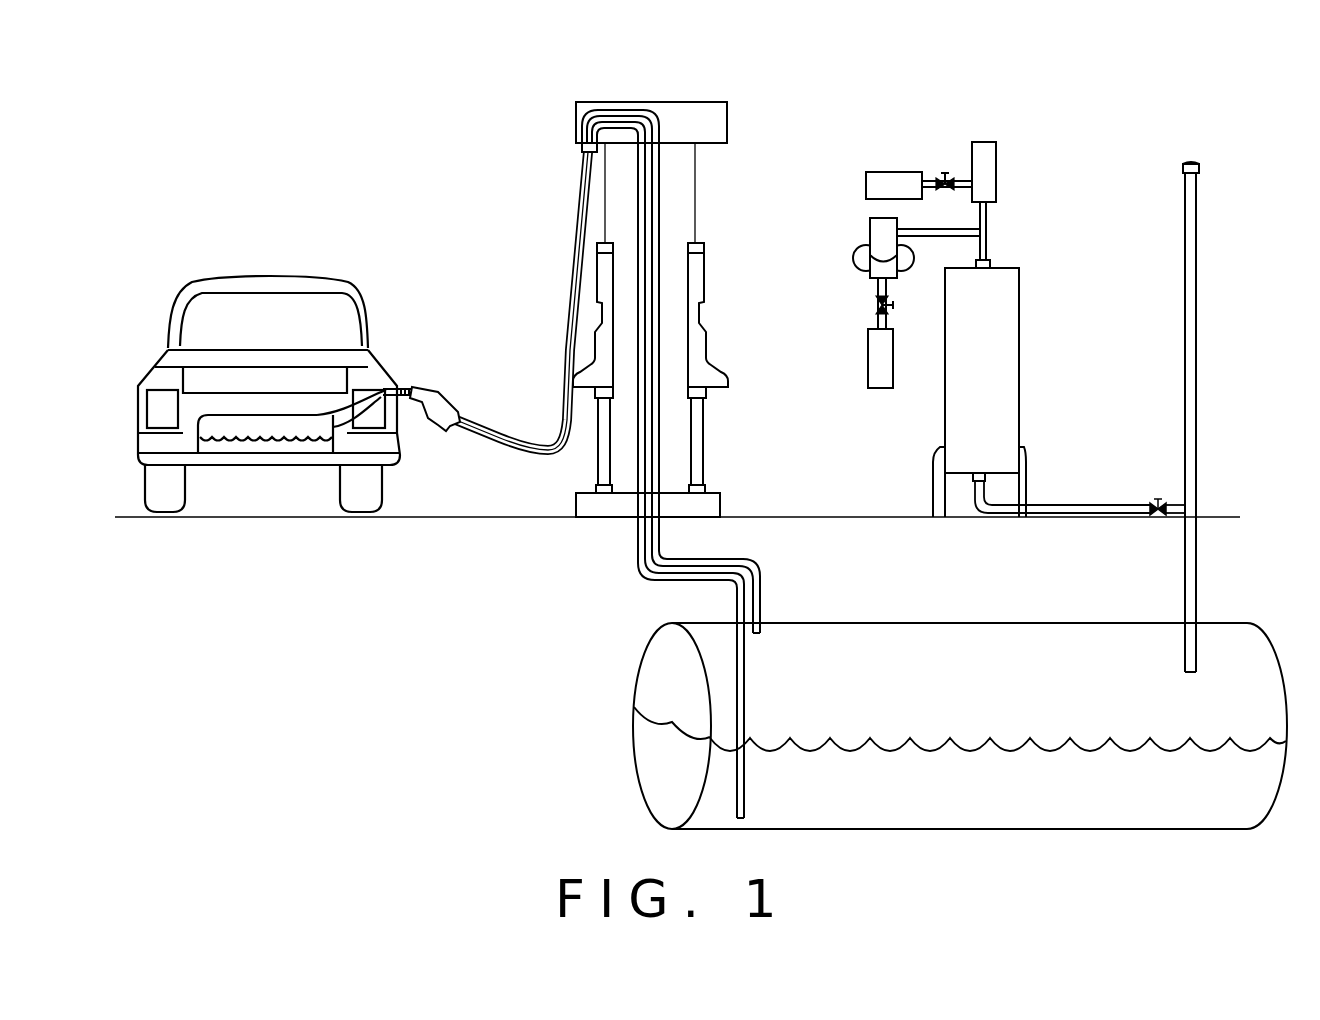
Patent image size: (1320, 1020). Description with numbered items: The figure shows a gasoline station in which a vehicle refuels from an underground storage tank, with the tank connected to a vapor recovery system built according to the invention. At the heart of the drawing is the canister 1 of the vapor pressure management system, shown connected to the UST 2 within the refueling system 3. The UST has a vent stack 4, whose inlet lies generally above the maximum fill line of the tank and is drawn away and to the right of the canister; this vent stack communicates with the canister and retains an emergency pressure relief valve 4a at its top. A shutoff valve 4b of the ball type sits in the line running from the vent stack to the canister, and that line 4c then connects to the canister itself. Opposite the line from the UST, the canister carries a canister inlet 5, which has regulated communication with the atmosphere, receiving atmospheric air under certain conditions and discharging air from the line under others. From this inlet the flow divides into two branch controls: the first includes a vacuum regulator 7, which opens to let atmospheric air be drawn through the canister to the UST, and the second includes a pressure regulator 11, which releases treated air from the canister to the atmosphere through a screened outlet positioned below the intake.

The canister 1 is at (1019, 367).
The UST 2 is at (873, 658).
The refueling system 3 is at (573, 278).
The vent stack 4 is at (1197, 325).
The emergency pressure relief valve 4a is at (1200, 171).
The shutoff valve 4b is at (1152, 502).
The connecting pipe 4c is at (1048, 505).
The canister inlet 5 is at (996, 264).
The vacuum regulator 7 is at (997, 183).
The pressure regulator 11 is at (870, 237).